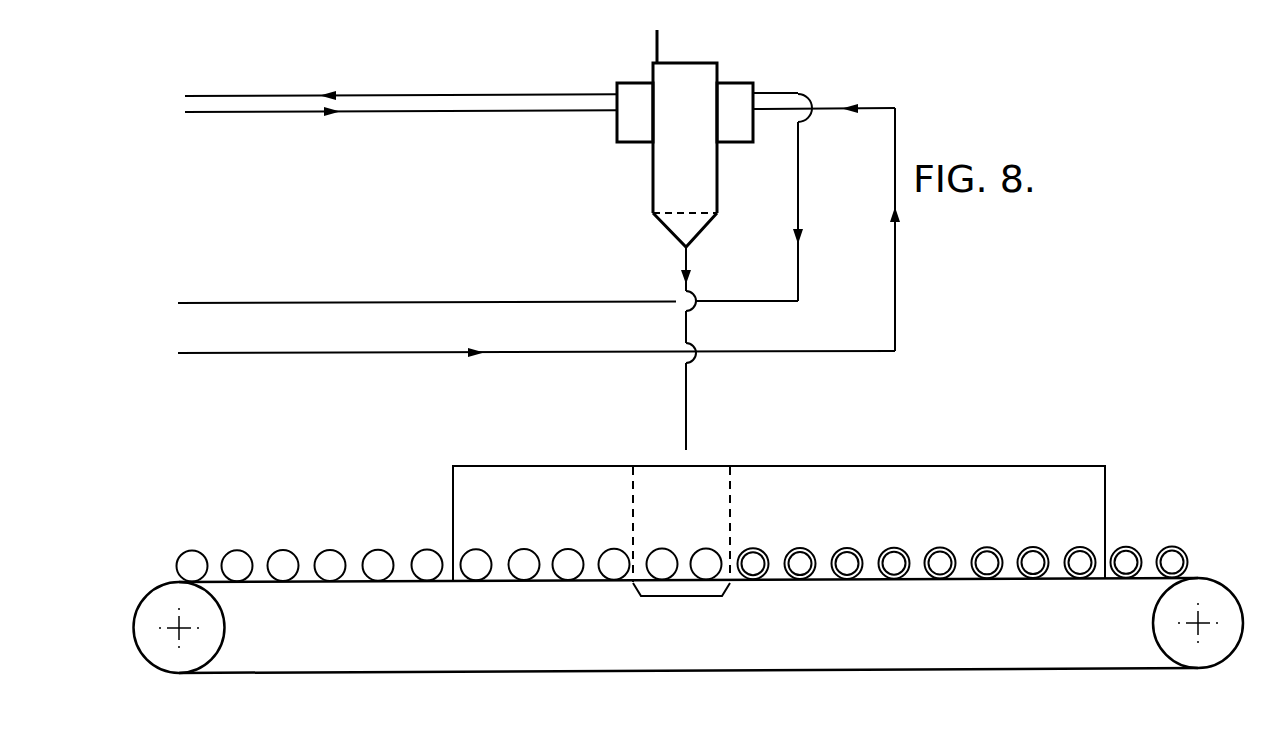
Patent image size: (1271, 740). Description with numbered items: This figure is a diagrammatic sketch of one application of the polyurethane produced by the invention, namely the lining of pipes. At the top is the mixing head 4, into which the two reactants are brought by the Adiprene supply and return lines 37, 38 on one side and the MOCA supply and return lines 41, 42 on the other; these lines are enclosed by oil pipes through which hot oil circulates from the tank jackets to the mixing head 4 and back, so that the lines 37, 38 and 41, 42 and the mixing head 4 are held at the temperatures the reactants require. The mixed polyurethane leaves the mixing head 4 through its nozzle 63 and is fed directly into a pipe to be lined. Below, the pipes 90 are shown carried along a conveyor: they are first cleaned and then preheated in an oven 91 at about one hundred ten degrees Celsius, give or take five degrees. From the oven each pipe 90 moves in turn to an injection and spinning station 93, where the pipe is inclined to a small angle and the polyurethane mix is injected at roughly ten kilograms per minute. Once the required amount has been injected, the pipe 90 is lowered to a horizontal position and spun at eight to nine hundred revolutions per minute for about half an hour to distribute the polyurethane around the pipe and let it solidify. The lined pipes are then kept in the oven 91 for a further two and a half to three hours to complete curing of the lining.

The mixing head 4 is at (667, 170).
The nozzle 63 is at (674, 225).
The Adiprene return line 38 is at (416, 94).
The Adiprene supply line 37 is at (484, 116).
The MOCA return line 42 is at (800, 247).
The MOCA supply line 41 is at (897, 262).
The oven 91 is at (541, 478).
The pipes 90 is at (370, 560).
The injection and spinning station 93 is at (690, 598).